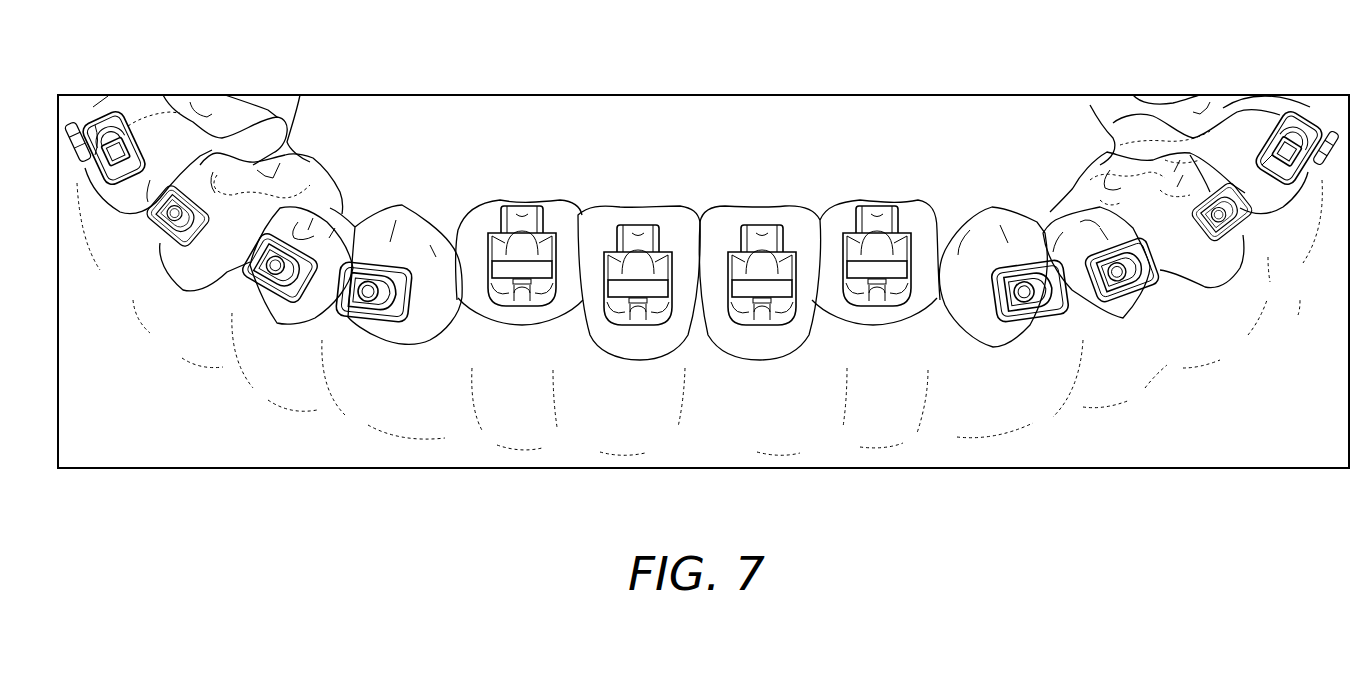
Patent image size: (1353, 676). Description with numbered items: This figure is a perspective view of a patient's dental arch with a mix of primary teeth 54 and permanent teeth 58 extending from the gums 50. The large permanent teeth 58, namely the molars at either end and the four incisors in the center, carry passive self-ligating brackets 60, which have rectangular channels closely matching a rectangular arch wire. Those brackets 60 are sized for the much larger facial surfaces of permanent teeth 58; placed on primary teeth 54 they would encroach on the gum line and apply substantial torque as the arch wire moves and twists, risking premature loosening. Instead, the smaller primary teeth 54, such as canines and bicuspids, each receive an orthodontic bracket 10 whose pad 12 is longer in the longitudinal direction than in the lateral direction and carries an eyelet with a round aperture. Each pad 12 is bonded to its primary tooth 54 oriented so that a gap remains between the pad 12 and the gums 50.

The orthodontic bracket 10 is at (1096, 353).
The pad 12 is at (1002, 288).
The gums 50 is at (947, 385).
The primary teeth 54 is at (993, 227).
The permanent teeth 58 is at (163, 100).
The passive self-ligating brackets 60 is at (92, 112).